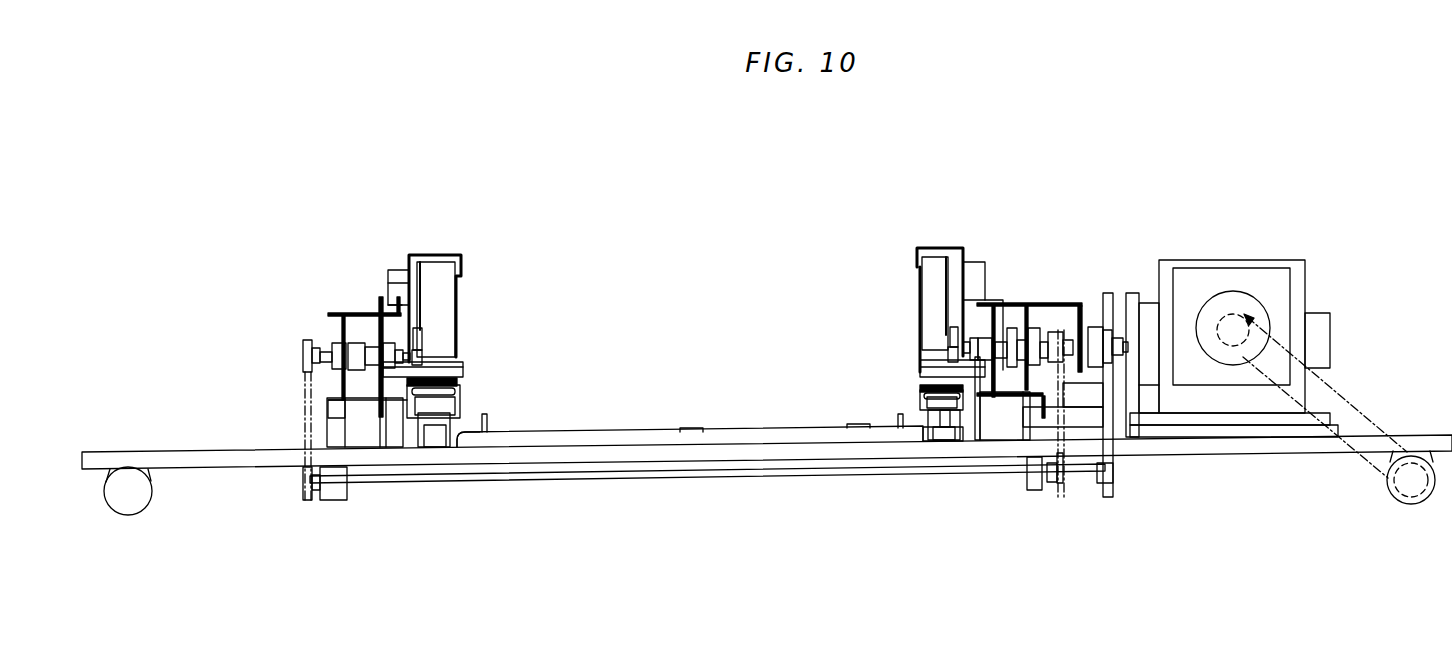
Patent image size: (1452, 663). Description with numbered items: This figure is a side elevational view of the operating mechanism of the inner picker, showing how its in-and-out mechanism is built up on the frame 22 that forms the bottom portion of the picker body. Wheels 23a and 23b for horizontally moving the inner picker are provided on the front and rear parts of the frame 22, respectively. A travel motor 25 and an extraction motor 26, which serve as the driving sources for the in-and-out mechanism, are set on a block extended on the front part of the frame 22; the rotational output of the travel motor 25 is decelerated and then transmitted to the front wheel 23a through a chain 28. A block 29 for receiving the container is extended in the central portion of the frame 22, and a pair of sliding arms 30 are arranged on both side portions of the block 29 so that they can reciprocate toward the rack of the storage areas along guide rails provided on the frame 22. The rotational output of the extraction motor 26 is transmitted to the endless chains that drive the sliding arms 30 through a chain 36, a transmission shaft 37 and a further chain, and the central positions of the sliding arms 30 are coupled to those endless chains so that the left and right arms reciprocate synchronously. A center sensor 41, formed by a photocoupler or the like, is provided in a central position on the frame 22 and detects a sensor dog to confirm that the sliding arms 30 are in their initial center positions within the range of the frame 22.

The frame 22 is at (194, 458).
The wheel 23a is at (1396, 500).
The wheel 23b is at (150, 492).
The travel motor 25 is at (1224, 275).
The extraction motor 26 is at (1149, 303).
The chain 28 is at (1330, 382).
The block 29 is at (652, 428).
The sliding arm 30 is at (432, 246).
The chain 36 is at (1125, 445).
The transmission shaft 37 is at (703, 483).
The center sensor 41 is at (1083, 400).